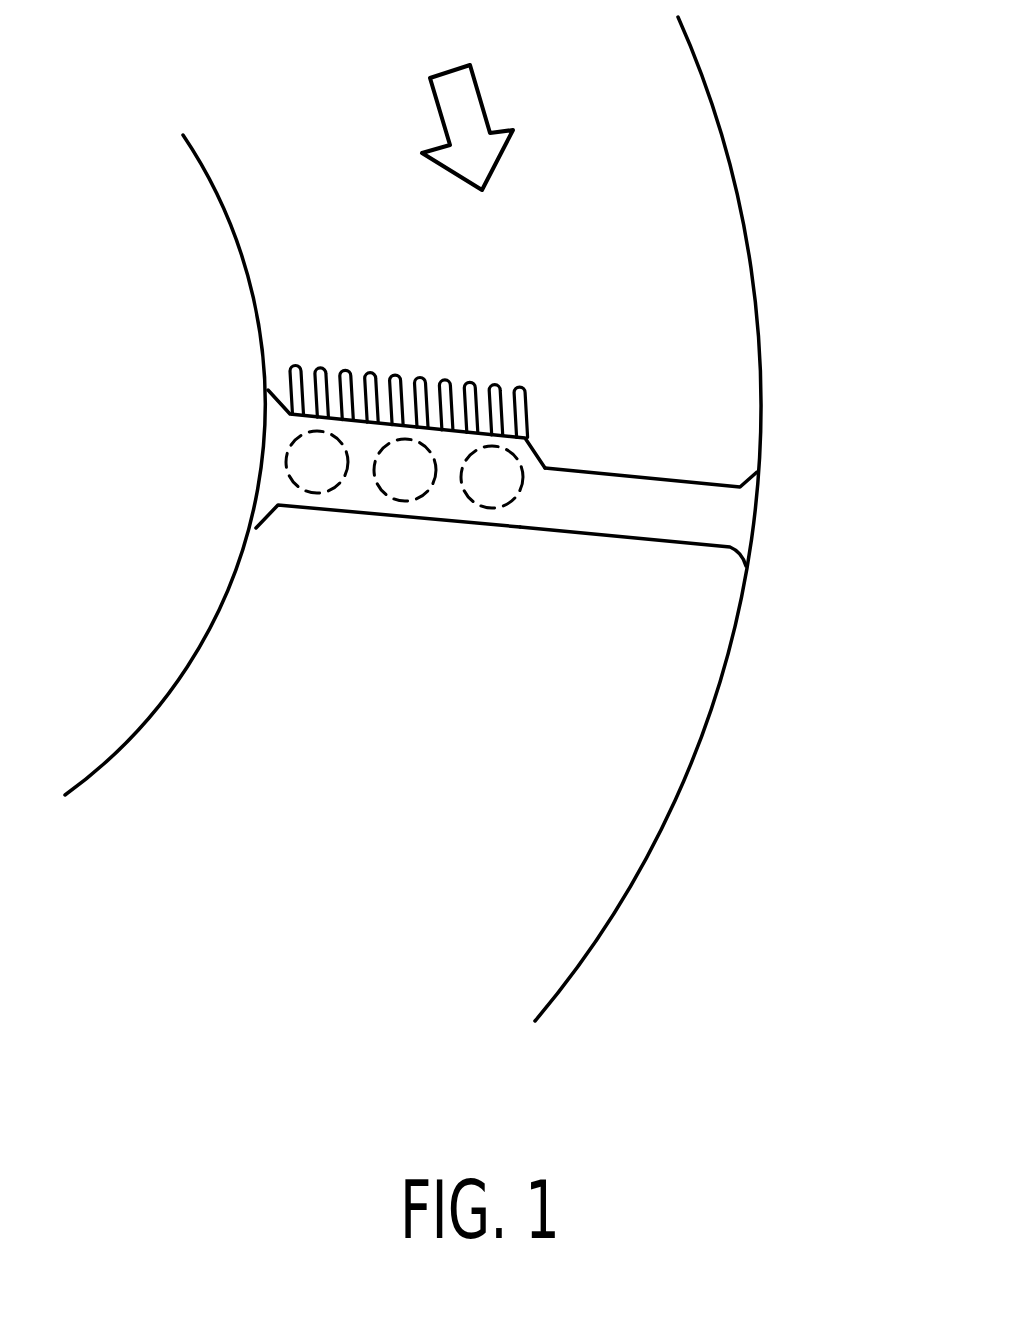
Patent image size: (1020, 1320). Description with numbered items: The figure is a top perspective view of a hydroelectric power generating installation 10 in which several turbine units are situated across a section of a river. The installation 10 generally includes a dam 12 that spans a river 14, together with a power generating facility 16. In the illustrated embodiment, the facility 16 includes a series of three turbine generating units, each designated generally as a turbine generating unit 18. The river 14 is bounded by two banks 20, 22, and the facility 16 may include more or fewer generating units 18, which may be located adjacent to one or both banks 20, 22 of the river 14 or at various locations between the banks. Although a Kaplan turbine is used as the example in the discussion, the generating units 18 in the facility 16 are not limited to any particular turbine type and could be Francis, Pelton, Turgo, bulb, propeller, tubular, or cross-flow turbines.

The hydroelectric power generating installation 10 is at (501, 433).
The dam 12 is at (720, 518).
The river 14 is at (588, 279).
The power generating facility 16 is at (283, 490).
The turbine generating unit 18 is at (478, 510).
The bank 20 is at (218, 343).
The bank 22 is at (850, 276).